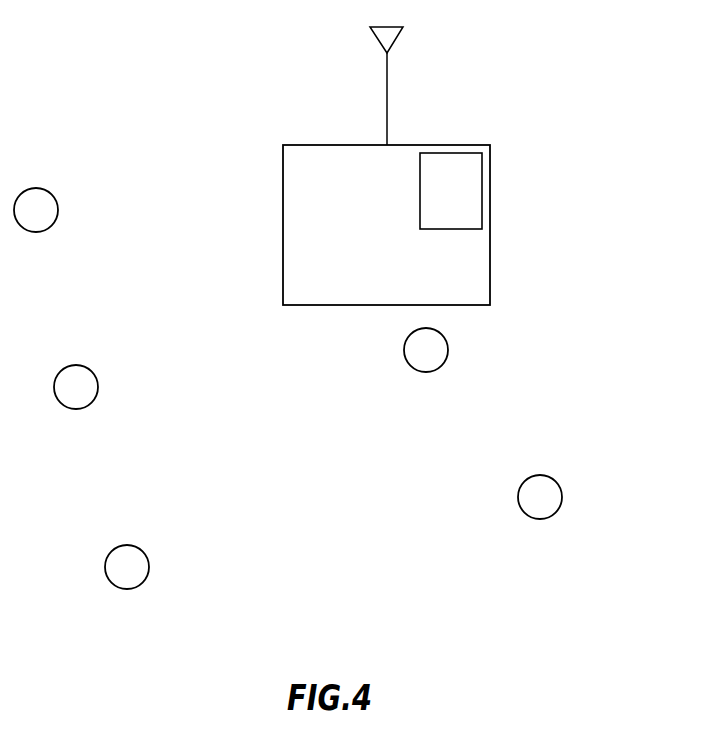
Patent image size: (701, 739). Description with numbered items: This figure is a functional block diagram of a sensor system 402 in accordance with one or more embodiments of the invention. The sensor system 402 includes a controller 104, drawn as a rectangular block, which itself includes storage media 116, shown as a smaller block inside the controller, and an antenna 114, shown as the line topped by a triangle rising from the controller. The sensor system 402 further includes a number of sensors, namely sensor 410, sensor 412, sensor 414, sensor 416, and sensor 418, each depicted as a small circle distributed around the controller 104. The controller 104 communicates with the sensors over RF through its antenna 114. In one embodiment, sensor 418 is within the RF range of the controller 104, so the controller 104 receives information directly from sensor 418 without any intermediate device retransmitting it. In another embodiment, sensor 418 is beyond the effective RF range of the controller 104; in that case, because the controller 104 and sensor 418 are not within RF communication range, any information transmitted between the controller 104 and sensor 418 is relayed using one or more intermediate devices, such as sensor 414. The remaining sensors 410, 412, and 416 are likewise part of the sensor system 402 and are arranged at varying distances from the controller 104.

The sensor system 402 is at (126, 98).
The controller 104 is at (283, 183).
The antenna 114 is at (387, 117).
The storage media 116 is at (420, 167).
The sensor 410 is at (57, 220).
The sensor 412 is at (98, 398).
The sensor 414 is at (448, 360).
The sensor 416 is at (563, 507).
The sensor 418 is at (148, 578).